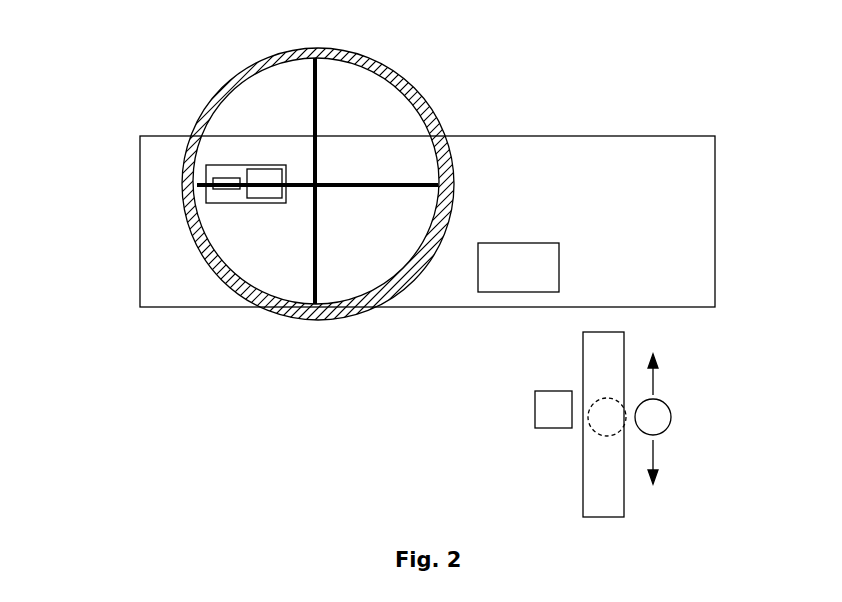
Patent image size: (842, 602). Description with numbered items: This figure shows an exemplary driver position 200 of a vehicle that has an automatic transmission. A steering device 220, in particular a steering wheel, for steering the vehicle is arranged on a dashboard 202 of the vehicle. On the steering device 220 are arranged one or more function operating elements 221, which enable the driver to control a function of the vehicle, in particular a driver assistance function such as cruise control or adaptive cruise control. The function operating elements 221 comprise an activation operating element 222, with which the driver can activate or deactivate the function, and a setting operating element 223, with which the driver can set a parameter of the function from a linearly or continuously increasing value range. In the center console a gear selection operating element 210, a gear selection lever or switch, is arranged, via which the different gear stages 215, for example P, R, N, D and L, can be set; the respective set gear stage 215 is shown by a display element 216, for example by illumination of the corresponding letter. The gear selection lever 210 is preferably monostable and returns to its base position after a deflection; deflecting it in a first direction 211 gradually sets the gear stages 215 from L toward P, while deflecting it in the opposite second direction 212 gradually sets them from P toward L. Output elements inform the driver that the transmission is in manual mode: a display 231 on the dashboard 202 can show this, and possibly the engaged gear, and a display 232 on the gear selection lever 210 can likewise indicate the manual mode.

The driver position 200 is at (108, 98).
The dashboard 202 is at (145, 215).
The steering device 220 is at (423, 107).
The function operating element 221 is at (256, 165).
The activation operating element 222 is at (272, 190).
The setting operating element 223 is at (224, 190).
The display 231 is at (548, 256).
The gear stages 215 is at (626, 345).
The display element 216 is at (590, 428).
The display 232 is at (544, 402).
The gear selection operating element 210 is at (668, 420).
The first direction 211 is at (655, 374).
The second direction 212 is at (655, 462).